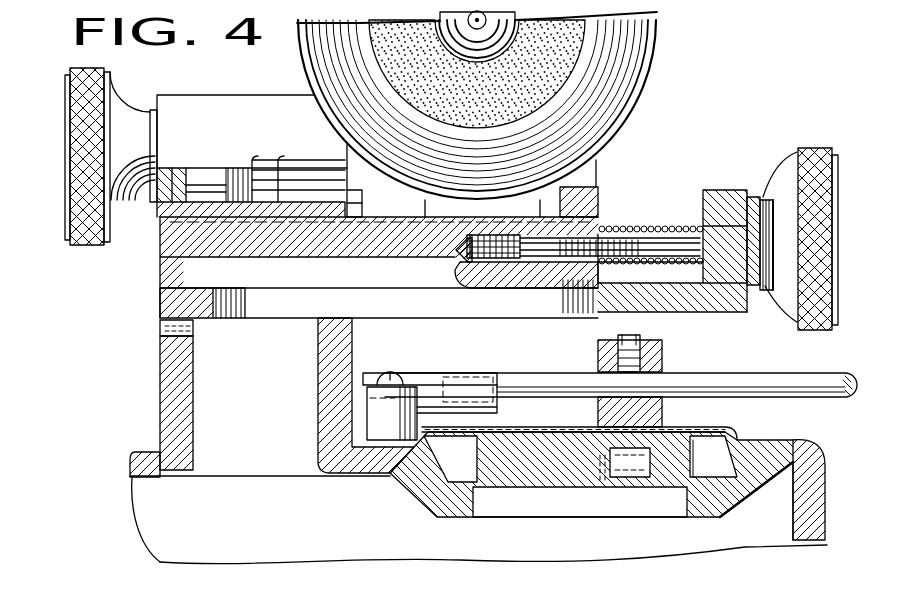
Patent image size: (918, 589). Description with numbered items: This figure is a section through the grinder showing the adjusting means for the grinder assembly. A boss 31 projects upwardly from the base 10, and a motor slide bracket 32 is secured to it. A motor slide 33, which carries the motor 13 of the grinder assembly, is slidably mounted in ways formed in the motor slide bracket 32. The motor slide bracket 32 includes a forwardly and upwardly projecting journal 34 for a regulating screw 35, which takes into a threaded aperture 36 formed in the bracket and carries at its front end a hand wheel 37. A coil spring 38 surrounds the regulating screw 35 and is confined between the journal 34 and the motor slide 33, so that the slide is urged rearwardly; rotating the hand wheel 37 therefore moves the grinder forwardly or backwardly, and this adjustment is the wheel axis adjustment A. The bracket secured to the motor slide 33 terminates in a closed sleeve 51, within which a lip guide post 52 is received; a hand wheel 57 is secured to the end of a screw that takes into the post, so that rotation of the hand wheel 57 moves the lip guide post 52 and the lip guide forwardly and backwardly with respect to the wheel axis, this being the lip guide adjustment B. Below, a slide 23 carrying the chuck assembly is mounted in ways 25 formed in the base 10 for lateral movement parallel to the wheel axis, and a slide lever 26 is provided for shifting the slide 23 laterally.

The base 10 is at (138, 462).
The motor 13 is at (657, 49).
The slide 23 is at (712, 427).
The ways 25 is at (407, 474).
The slide lever 26 is at (780, 395).
The boss 31 is at (176, 383).
The motor slide bracket 32 is at (160, 308).
The motor slide 33 is at (160, 262).
The journal 34 is at (720, 188).
The regulating screw 35 is at (661, 231).
The threaded aperture 36 is at (457, 253).
The hand wheel 37 is at (810, 150).
The coil spring 38 is at (626, 226).
The sleeve 51 is at (250, 80).
The lip guide post 52 is at (362, 196).
The hand wheel 57 is at (84, 245).
The wheel axis adjustment A is at (753, 150).
The lip guide adjustment B is at (134, 101).